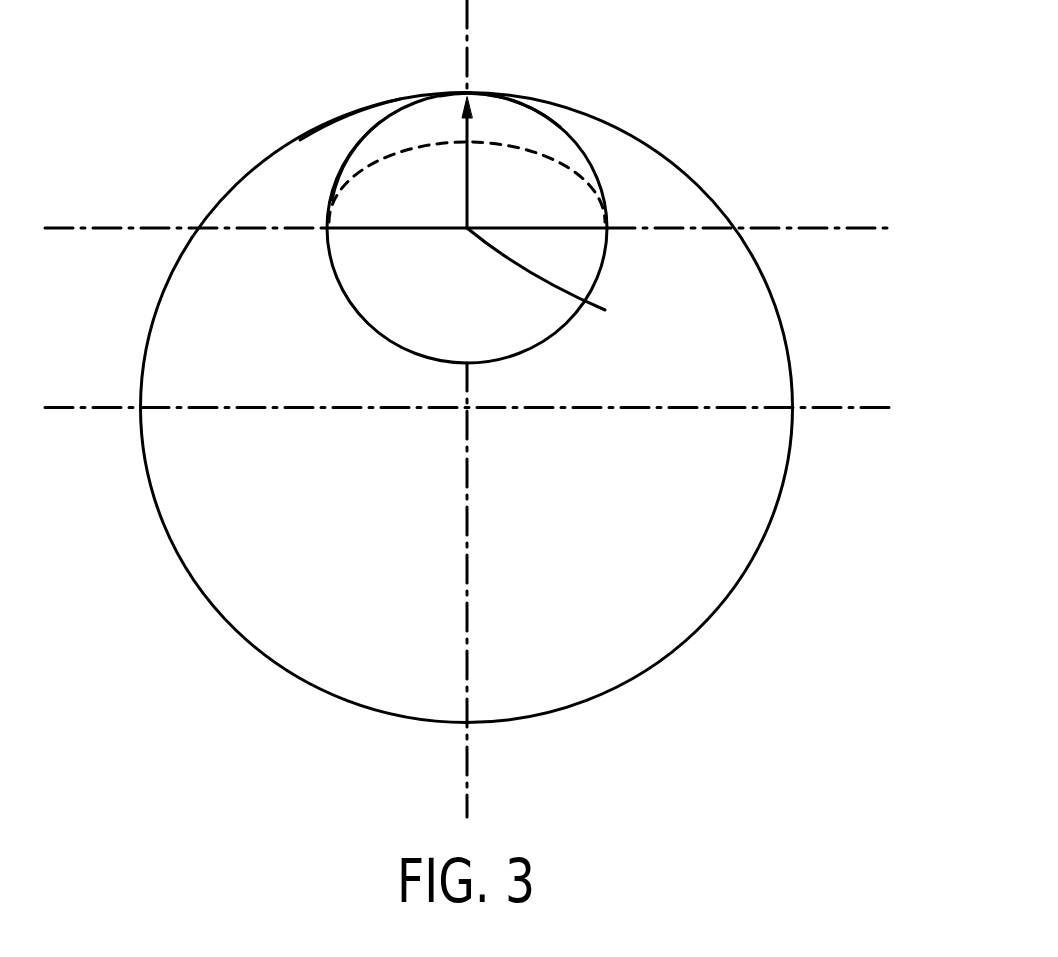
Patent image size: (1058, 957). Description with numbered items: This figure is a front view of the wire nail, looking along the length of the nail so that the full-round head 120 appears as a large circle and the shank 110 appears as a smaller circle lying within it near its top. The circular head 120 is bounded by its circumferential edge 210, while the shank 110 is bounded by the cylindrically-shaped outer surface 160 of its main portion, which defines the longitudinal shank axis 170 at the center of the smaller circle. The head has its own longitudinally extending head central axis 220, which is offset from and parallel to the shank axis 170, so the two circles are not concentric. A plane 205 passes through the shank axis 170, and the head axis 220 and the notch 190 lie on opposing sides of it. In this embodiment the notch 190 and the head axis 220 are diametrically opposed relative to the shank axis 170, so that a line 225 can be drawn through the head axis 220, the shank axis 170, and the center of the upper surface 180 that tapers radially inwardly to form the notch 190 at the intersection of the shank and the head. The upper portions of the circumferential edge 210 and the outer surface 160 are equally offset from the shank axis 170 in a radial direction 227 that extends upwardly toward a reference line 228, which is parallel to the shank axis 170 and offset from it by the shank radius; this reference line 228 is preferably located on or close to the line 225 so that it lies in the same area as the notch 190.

The shank 110 is at (383, 282).
The head 120 is at (677, 555).
The outer surface 160 is at (342, 158).
The shank axis 170 is at (562, 288).
The upper surface 180 is at (535, 158).
The notch 190 is at (507, 123).
The plane 205 is at (835, 228).
The circumferential edge 210 is at (342, 113).
The head central axis 220 is at (467, 407).
The line 225 is at (468, 760).
The radial direction 227 is at (463, 131).
The reference line 228 is at (470, 92).